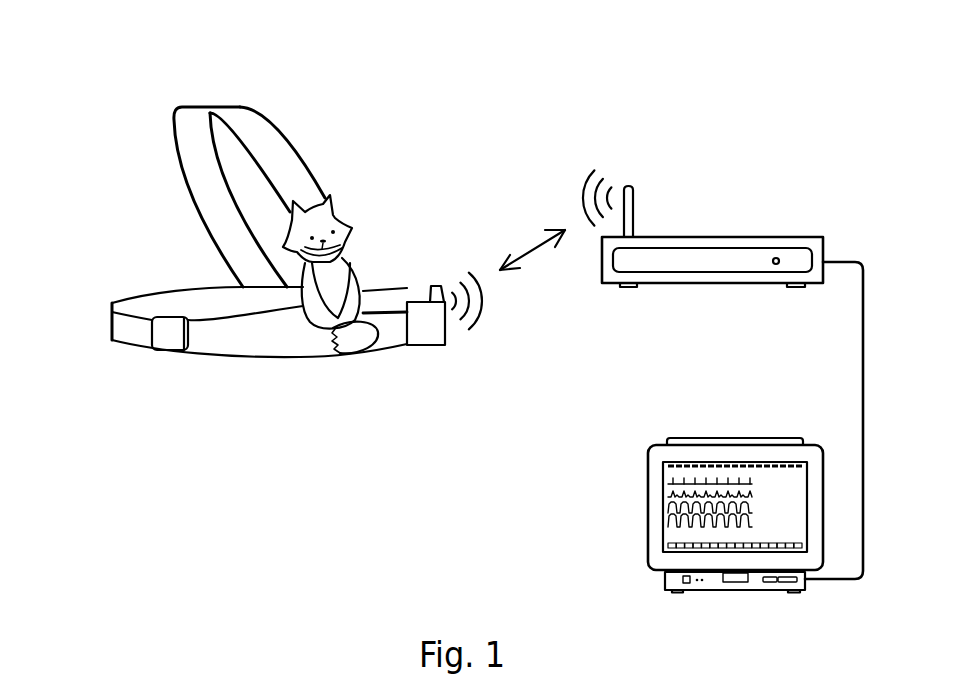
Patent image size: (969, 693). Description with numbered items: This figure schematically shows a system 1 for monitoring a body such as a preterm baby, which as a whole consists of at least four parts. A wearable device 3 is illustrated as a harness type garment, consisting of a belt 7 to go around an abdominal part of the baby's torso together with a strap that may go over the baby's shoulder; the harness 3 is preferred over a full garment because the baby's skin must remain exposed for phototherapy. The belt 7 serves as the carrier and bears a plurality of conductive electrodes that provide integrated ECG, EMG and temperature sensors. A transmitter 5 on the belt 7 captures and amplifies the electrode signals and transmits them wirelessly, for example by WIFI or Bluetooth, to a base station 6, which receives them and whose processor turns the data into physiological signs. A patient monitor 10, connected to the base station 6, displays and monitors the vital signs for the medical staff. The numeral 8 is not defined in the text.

The system 1 is at (110, 133).
The wearable device 3 is at (272, 148).
The transmitter 5 is at (428, 340).
The base station 6 is at (713, 237).
The belt 7 is at (272, 340).
The collar 8 is at (155, 307).
The patient monitor 10 is at (648, 507).